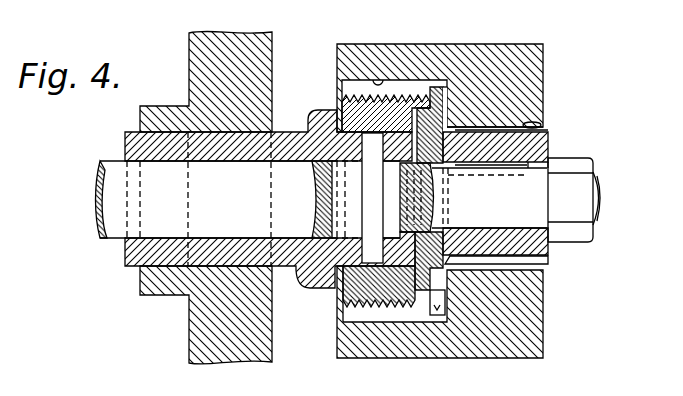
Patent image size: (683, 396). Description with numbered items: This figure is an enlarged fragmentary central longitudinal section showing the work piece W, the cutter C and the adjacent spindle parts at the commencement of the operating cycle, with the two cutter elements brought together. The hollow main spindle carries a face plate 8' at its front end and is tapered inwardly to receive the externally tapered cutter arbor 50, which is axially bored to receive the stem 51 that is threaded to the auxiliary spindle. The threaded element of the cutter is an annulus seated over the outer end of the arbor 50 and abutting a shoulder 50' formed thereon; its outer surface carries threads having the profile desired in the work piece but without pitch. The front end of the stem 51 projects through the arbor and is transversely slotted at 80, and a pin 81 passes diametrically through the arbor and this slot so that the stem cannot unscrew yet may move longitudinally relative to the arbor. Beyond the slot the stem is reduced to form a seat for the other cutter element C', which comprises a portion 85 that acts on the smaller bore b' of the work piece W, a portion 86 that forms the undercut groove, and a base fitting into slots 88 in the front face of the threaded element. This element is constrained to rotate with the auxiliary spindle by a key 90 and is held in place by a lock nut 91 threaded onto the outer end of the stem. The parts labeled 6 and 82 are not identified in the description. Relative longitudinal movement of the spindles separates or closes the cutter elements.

The face plate 8' is at (206, 210).
The stem 51 is at (248, 199).
The shoulder 50' is at (268, 118).
The cutter arbor 50 is at (270, 278).
The slot 80 is at (326, 182).
The pin 81 is at (371, 206).
The work piece W is at (546, 308).
The threaded nut 6 is at (378, 81).
The collar 82 is at (437, 87).
The portion of cutter element 86 is at (445, 88).
The portion of cutter element 85 is at (510, 127).
The smaller bore b' is at (511, 116).
The cutter element C' is at (446, 227).
The key 90 is at (495, 168).
The lock nut 91 is at (588, 238).
The cutter C is at (510, 266).
The slots 88 is at (436, 316).